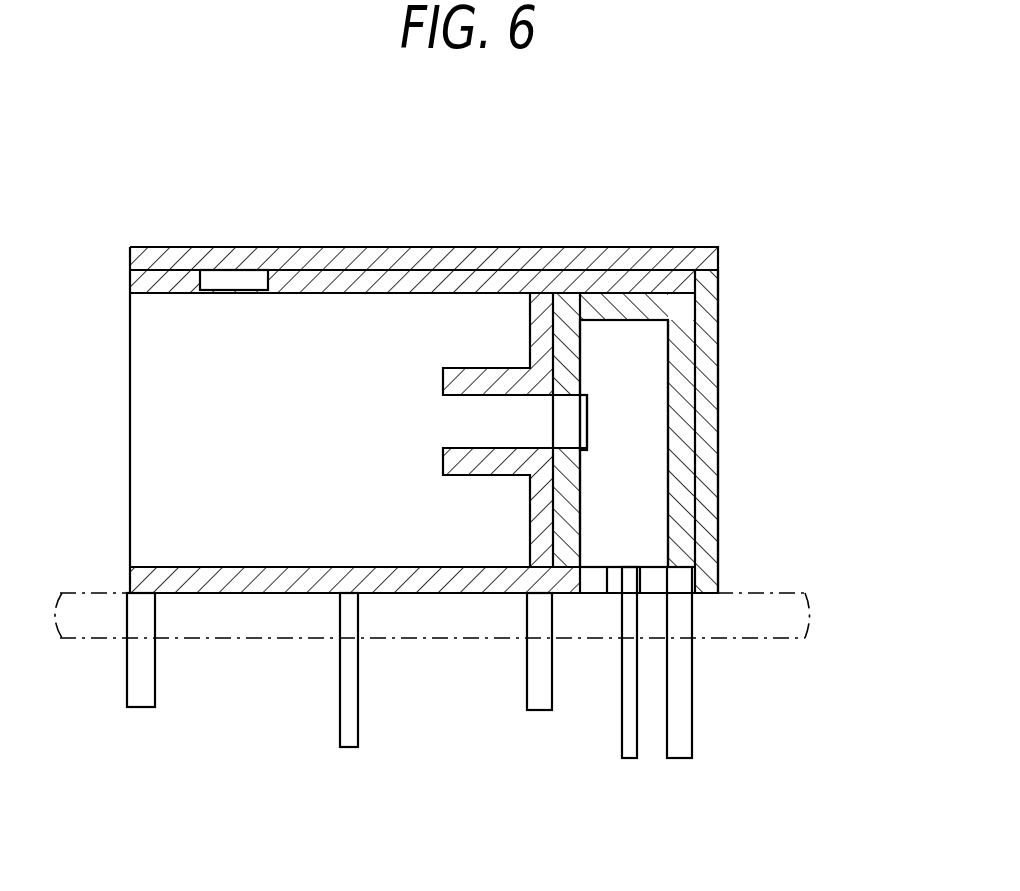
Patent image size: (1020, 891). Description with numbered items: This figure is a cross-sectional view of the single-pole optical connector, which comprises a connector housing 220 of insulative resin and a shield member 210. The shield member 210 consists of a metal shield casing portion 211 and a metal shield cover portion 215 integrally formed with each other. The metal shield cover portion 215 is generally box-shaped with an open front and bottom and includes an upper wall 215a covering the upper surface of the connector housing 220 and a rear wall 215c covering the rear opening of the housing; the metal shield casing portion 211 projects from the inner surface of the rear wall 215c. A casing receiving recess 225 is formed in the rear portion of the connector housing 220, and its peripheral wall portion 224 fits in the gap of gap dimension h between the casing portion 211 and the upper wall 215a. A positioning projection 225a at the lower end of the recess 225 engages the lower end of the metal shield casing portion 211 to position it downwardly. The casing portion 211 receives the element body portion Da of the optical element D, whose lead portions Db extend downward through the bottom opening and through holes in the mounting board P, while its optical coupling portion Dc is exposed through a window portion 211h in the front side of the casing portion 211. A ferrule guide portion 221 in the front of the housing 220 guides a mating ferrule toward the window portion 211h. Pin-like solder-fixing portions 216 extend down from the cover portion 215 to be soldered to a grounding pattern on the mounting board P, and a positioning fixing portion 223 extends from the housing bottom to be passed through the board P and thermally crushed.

The shield member 210 is at (567, 185).
The metal shield cover portion 215 is at (487, 247).
The upper wall 215a is at (300, 247).
The rear wall 215c is at (718, 504).
The ferrule guide portion 221 is at (375, 247).
The metal shield casing portion 211 is at (547, 247).
The window portion 211h is at (574, 440).
The peripheral wall portion 224 is at (657, 277).
The casing receiving recess 225 is at (713, 340).
The positioning projection 225a is at (606, 569).
The solder-fixing portions 216 is at (155, 677).
The positioning fixing portion 223 is at (358, 718).
The connector housing 220 is at (128, 432).
The gap dimension h is at (748, 233).
The optical element D is at (838, 523).
The element body portion Da is at (660, 538).
The lead portions Db is at (640, 665).
The optical coupling portion Dc is at (575, 408).
The mounting board P is at (95, 638).